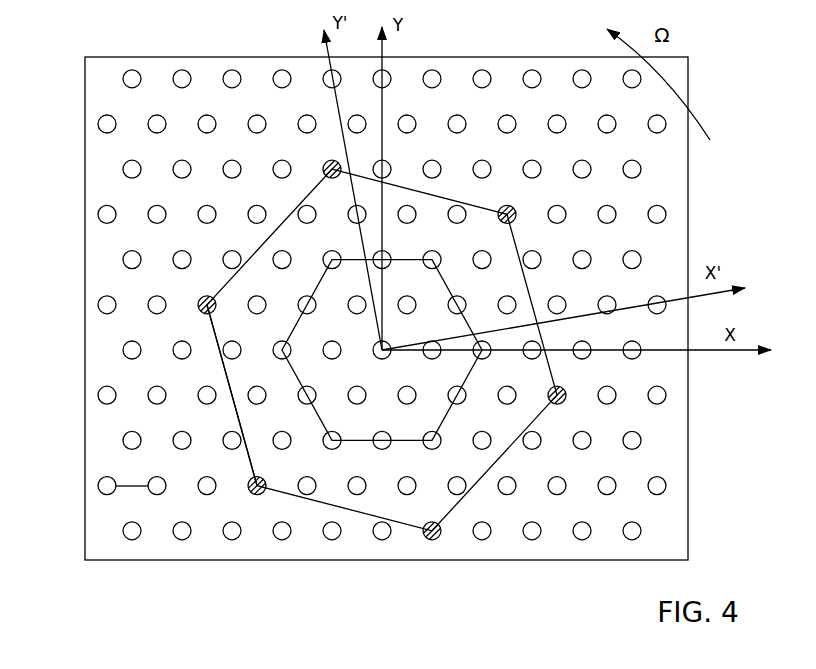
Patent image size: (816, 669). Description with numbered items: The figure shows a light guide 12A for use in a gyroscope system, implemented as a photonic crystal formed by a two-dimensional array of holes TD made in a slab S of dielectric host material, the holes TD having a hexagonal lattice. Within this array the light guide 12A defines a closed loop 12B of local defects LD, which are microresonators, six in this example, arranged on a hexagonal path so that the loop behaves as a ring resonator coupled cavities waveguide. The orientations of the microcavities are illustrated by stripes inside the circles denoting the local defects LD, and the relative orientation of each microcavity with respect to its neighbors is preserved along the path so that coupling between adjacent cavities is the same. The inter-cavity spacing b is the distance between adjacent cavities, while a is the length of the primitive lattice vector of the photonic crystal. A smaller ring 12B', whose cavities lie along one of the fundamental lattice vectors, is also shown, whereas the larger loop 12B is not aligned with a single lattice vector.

The light guide 12A is at (688, 453).
The closed loop 12B is at (384, 355).
The smaller ring 12B' is at (243, 350).
The holes TD is at (151, 118).
The local defects LD is at (432, 531).
The slab S is at (110, 263).
The length of the photonic crystal primitive lattice vector a is at (132, 475).
The inter-cavity spacing b is at (232, 395).